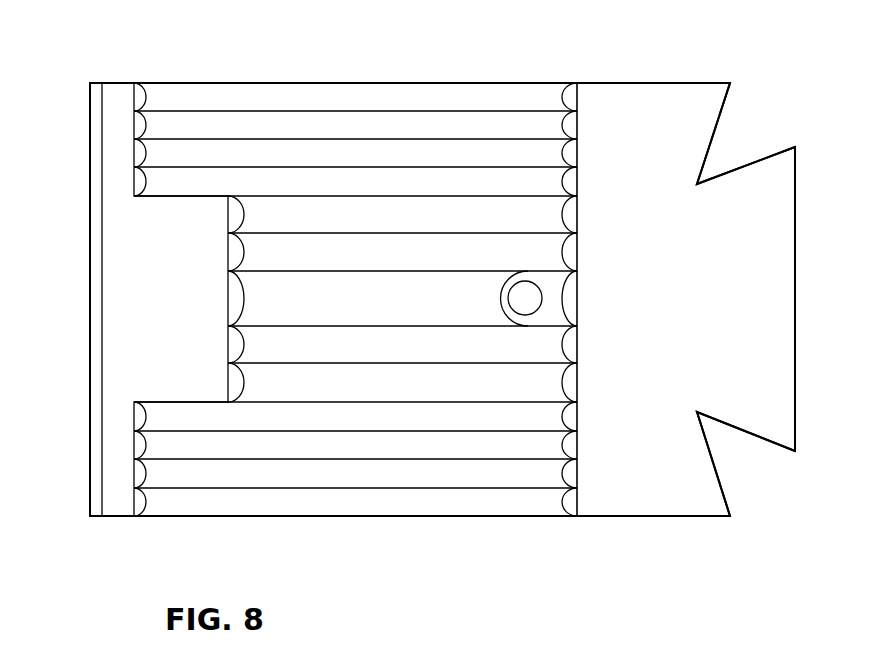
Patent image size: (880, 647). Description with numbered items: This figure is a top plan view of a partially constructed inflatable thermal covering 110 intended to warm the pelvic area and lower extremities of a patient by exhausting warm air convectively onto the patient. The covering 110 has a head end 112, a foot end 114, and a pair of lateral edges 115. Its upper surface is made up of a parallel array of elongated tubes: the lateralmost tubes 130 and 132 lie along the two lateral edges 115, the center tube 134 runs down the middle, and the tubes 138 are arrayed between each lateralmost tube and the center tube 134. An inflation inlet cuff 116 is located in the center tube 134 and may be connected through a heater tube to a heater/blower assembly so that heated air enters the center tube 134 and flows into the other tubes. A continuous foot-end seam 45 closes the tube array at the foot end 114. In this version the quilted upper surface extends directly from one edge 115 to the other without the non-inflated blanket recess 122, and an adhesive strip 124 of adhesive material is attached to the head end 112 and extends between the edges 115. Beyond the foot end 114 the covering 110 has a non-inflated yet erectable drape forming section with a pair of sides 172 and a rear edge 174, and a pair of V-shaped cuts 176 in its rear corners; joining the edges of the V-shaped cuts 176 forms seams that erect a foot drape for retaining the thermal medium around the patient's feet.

The covering 110 is at (308, 64).
The adhesive strip 124 is at (122, 380).
The non-inflated blanket recess 122 is at (162, 309).
The head end 112 is at (117, 508).
The lateralmost tube 130 is at (293, 505).
The lateral edges 115 is at (266, 82).
The foot-end seam 45 is at (427, 86).
The lateralmost tube 132 is at (496, 86).
The sides 172 is at (644, 90).
The V-shaped cuts 176 is at (737, 118).
The rear edge 174 is at (778, 168).
The foot end 114 is at (579, 248).
The tubes 138 is at (359, 485).
The center tube 134 is at (359, 307).
The inflation inlet cuff 116 is at (535, 297).